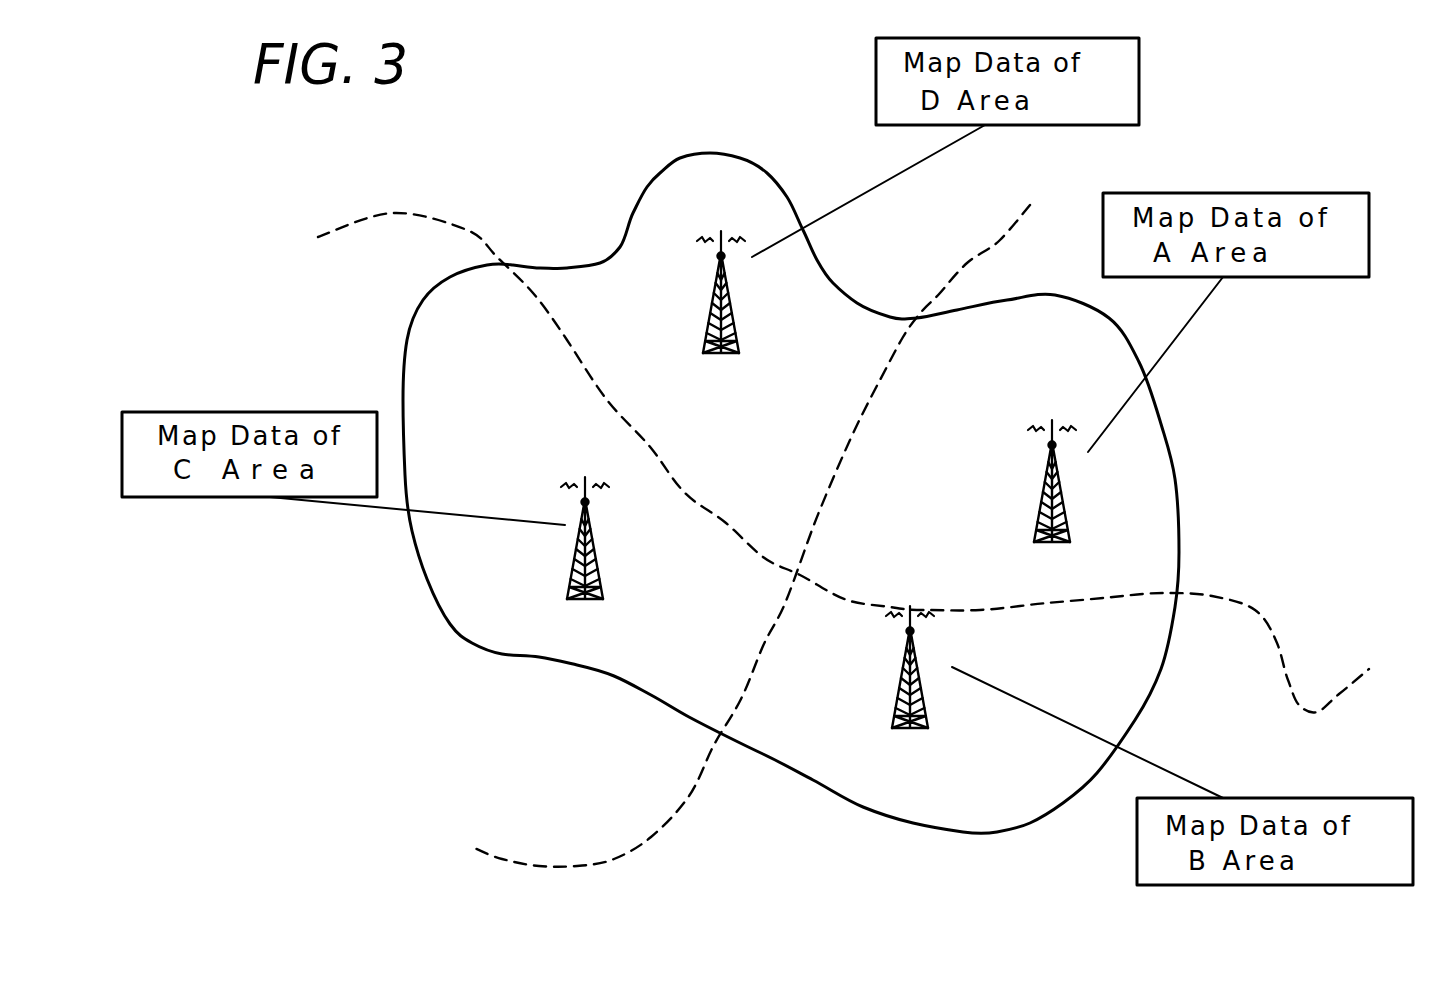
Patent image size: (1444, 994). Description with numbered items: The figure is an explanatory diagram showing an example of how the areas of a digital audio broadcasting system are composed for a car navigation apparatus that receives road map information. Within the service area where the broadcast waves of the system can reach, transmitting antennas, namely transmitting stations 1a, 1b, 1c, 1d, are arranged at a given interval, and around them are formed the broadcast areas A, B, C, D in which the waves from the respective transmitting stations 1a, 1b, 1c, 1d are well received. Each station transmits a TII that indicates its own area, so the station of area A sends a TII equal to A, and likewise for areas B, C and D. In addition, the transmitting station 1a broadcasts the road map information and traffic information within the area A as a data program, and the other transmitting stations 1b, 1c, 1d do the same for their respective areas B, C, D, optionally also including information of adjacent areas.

The transmitting station 1a is at (1043, 465).
The transmitting station 1b is at (927, 688).
The transmitting station 1c is at (603, 564).
The transmitting station 1d is at (737, 310).
The broadcast area A is at (1140, 432).
The broadcast area B is at (823, 742).
The broadcast area C is at (491, 605).
The broadcast area D is at (820, 290).